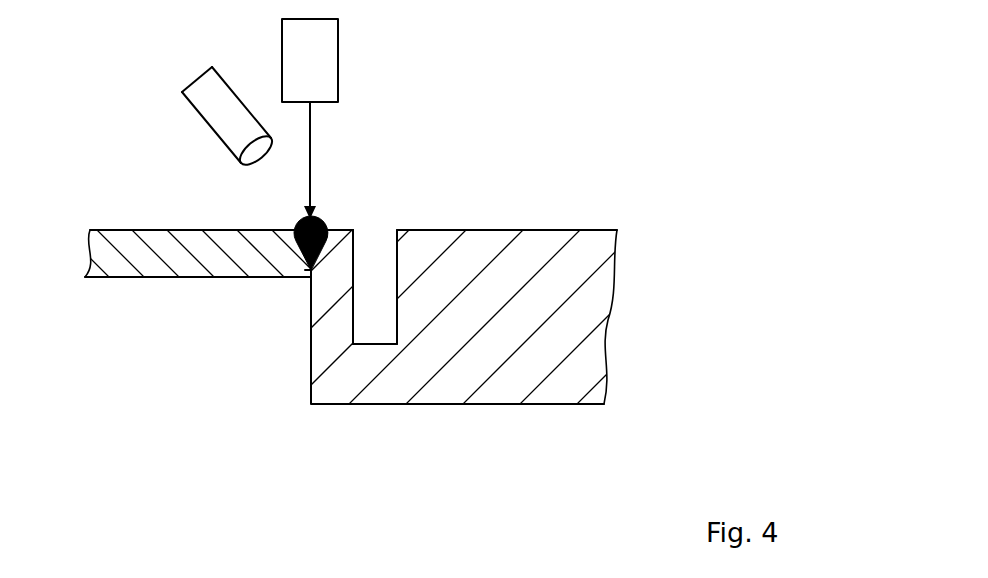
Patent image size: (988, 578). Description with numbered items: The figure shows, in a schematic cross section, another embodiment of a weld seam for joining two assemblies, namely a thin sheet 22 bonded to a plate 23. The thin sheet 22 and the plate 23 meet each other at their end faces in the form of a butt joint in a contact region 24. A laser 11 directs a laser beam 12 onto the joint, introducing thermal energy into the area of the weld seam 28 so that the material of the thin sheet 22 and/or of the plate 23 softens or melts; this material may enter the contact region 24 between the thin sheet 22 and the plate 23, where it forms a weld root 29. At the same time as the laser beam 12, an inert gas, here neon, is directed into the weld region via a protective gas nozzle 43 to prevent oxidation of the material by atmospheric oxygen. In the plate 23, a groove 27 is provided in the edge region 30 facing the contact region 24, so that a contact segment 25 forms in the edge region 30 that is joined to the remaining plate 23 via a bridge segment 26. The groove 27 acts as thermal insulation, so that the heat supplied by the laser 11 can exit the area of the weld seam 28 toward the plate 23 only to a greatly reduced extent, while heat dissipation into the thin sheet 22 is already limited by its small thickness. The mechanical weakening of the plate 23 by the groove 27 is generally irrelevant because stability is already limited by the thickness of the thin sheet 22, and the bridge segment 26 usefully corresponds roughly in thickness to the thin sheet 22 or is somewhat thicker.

The laser 11 is at (324, 73).
The laser beam 12 is at (312, 164).
The protective gas nozzle 43 is at (201, 80).
The thin sheet 22 is at (122, 232).
The plate 23 is at (593, 239).
The contact region 24 is at (305, 282).
The contact segment 25 is at (343, 261).
The bridge segment 26 is at (378, 384).
The groove 27 is at (392, 313).
The weld seam 28 is at (300, 224).
The weld root 29 is at (304, 259).
The edge region 30 is at (414, 209).